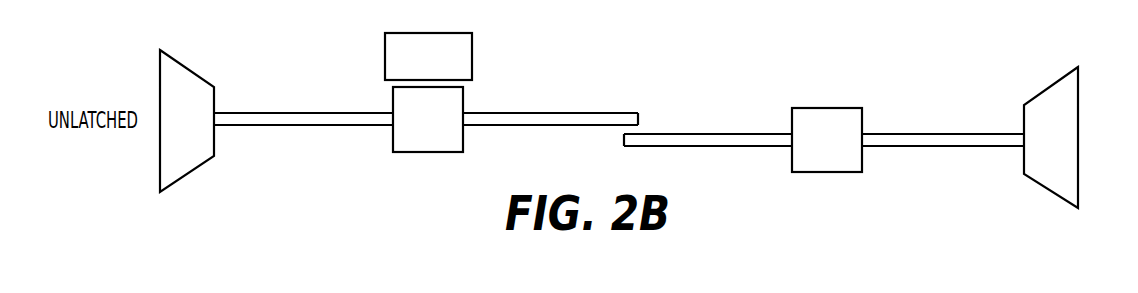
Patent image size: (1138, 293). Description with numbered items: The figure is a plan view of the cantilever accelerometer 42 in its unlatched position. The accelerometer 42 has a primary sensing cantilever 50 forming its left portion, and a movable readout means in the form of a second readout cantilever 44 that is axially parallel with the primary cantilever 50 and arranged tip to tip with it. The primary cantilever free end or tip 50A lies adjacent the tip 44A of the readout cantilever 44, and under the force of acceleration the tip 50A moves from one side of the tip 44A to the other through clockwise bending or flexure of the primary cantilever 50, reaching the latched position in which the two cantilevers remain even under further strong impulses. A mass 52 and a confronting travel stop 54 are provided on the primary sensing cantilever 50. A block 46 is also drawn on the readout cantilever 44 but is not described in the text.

The accelerometer 42 is at (557, 58).
The readout cantilever 44 is at (927, 133).
The tip of readout cantilever 44A is at (633, 148).
The second coupling member 46 is at (826, 108).
The primary cantilever 50 is at (312, 113).
The primary cantilever free end 50A is at (627, 112).
The mass 52 is at (463, 98).
The travel stop 54 is at (385, 53).